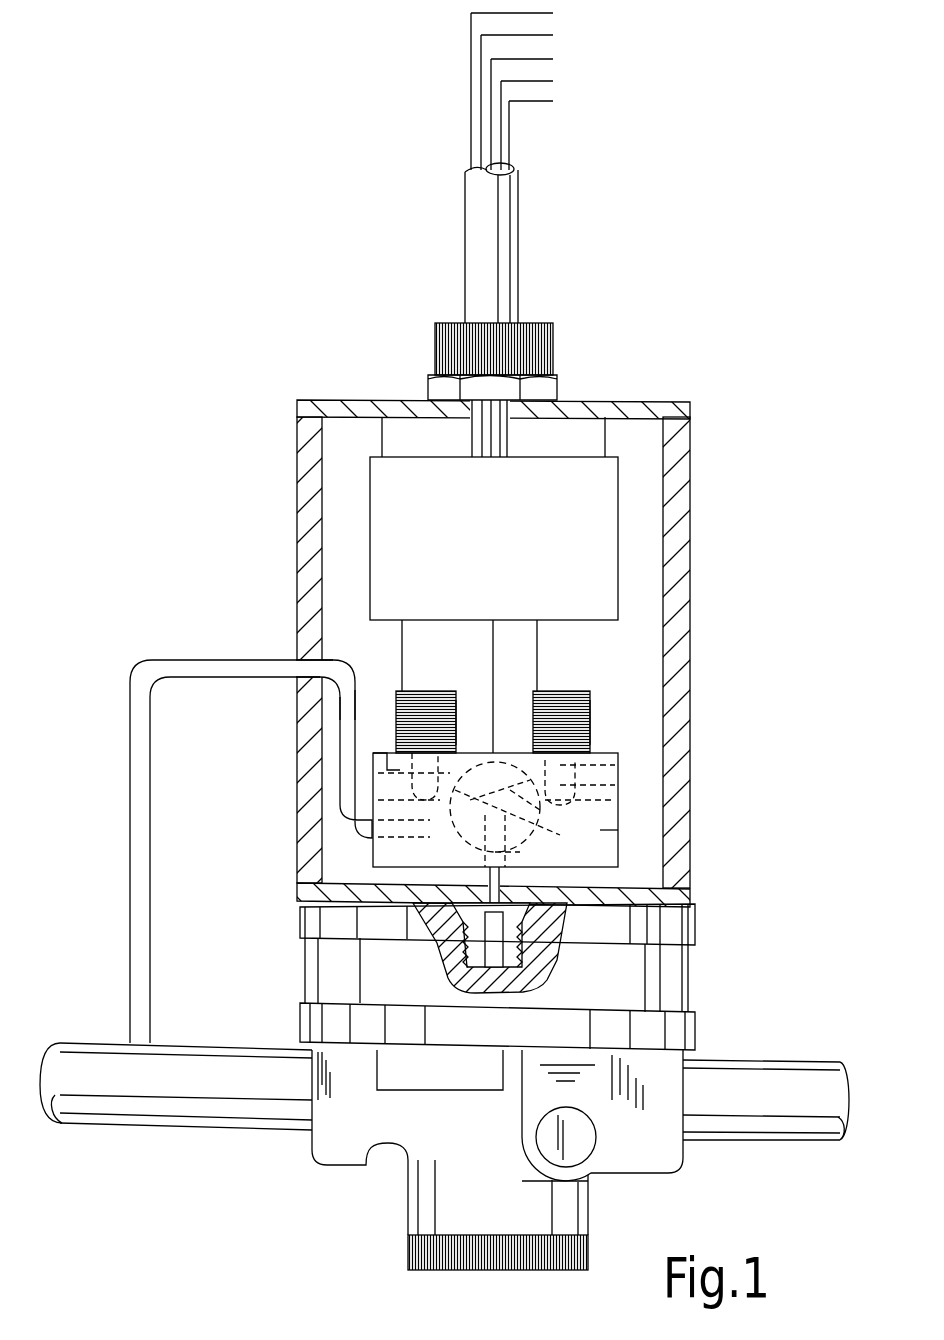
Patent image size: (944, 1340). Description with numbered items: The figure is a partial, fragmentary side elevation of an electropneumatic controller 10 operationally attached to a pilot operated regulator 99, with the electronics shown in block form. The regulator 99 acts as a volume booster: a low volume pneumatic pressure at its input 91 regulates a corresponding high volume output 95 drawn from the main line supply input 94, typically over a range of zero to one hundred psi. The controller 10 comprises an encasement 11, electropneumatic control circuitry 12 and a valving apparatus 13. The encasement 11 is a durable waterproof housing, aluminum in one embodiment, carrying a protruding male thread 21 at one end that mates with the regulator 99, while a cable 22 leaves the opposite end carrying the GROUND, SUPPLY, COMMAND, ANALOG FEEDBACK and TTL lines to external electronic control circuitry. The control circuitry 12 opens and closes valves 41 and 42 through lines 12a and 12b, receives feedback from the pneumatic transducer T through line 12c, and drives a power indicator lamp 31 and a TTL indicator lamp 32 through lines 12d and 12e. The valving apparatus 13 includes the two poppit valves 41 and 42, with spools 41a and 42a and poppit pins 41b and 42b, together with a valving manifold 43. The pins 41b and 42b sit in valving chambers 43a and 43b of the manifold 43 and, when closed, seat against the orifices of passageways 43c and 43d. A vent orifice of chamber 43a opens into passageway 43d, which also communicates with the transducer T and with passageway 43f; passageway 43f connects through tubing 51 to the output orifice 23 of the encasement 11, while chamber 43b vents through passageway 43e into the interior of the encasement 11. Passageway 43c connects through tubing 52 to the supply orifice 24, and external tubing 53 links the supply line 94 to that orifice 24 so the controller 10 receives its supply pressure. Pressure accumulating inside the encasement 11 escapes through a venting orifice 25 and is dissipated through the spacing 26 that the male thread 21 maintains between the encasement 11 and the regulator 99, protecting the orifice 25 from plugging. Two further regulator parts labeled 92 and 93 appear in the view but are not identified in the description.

The electropneumatic controller 10 is at (716, 570).
The encasement 11 is at (690, 697).
The electropneumatic control circuitry 12 is at (618, 553).
The line 12a is at (402, 645).
The line 12b is at (537, 650).
The line 12c is at (493, 650).
The line 12d is at (382, 437).
The line 12e is at (605, 440).
The valving apparatus 13 is at (619, 851).
The protruding male thread 21 is at (460, 950).
The cable 22 is at (512, 214).
The output orifice 23 is at (520, 978).
The supply orifice 24 is at (292, 658).
The venting orifice 25 is at (607, 1001).
The spacing 26 is at (692, 912).
The power indicator lamp 31 is at (378, 399).
The TTL indicator lamp 32 is at (603, 401).
The valve 41 is at (430, 690).
The spool 41a is at (456, 712).
The poppit pin 41b is at (400, 752).
The valve 42 is at (580, 690).
The spool 42a is at (592, 722).
The poppit pin 42b is at (612, 757).
The valving manifold 43 is at (624, 857).
The valving chamber 43a is at (380, 762).
The valving chamber 43b is at (620, 762).
The passageway 43c is at (373, 801).
The passageway 43d is at (620, 822).
The passageway 43e is at (620, 787).
The passageway 43f is at (515, 852).
The tubing 51 is at (486, 875).
The tubing 52 is at (352, 684).
The tubing 53 is at (174, 657).
The input 91 is at (536, 984).
The valve body 92 is at (684, 1163).
The outlet port 93 is at (416, 1194).
The supply input 94 is at (213, 1043).
The pressure outputs 95 is at (794, 1060).
The pilot operated regulator 99 is at (598, 1192).